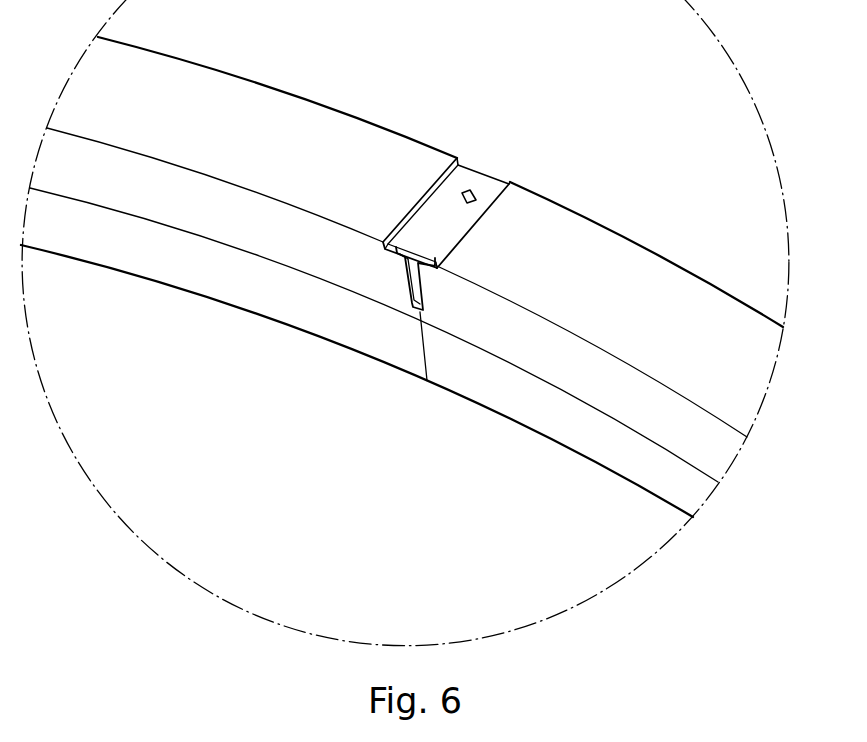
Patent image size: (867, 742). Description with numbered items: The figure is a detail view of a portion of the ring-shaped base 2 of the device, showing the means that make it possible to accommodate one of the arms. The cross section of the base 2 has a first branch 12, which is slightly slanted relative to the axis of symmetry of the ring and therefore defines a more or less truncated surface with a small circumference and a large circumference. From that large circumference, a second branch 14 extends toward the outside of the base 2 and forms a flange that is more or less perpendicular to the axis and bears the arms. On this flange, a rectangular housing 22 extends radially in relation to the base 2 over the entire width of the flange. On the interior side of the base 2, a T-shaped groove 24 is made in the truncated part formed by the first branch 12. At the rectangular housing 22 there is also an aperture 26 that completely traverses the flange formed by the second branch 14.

The ring-shaped base 2 is at (646, 208).
The first branch 12 is at (245, 295).
The second branch 14 is at (248, 92).
The rectangular housing 22 is at (477, 178).
The T-shaped groove 24 is at (423, 253).
The aperture 26 is at (478, 199).